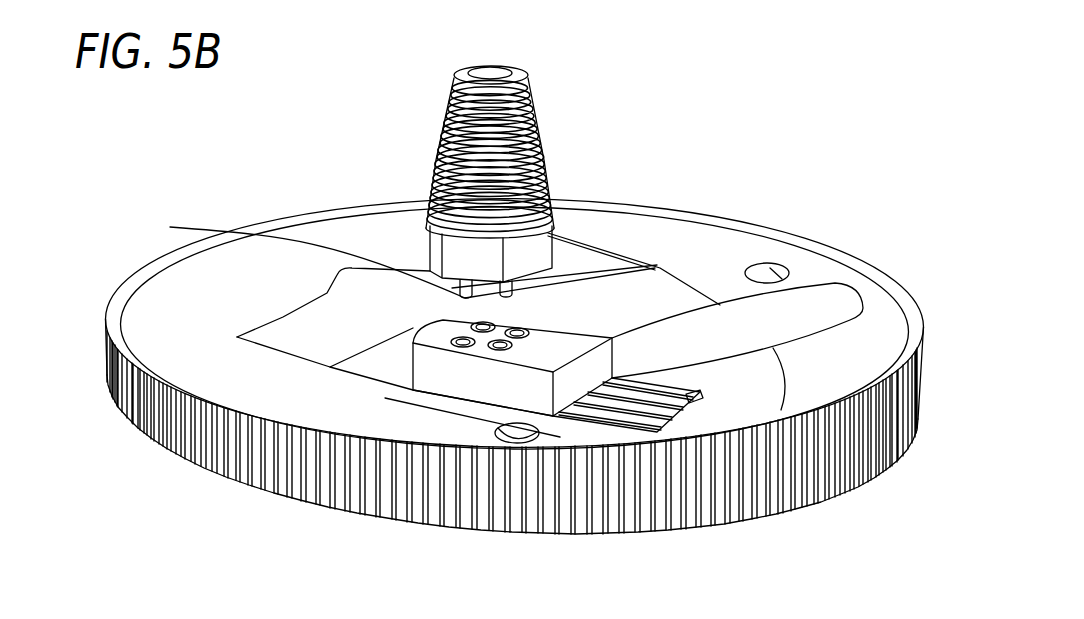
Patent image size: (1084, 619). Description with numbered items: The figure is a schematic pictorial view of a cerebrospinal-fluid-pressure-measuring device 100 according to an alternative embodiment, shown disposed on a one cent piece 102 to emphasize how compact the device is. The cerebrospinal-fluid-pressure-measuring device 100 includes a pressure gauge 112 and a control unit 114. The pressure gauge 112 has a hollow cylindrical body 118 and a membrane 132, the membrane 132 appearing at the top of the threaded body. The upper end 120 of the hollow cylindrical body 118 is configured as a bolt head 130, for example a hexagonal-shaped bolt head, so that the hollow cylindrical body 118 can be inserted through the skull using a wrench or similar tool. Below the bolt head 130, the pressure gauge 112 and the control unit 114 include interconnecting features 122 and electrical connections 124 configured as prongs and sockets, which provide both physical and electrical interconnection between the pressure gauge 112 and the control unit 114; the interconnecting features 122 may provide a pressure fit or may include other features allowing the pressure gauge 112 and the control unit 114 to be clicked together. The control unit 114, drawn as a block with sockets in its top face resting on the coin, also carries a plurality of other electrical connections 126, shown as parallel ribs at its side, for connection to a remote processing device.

The cerebrospinal-fluid-pressure-measuring device 100 is at (810, 99).
The one cent piece 102 is at (587, 534).
The pressure gauge 112 is at (437, 150).
The control unit 114 is at (460, 395).
The hollow cylindrical body 118 is at (540, 118).
The upper end 120 is at (661, 206).
The interconnecting features 122 is at (312, 309).
The electrical connections 124 is at (430, 323).
The electrical connections 126 is at (693, 408).
The bolt head 130 is at (555, 213).
The membrane 132 is at (487, 69).